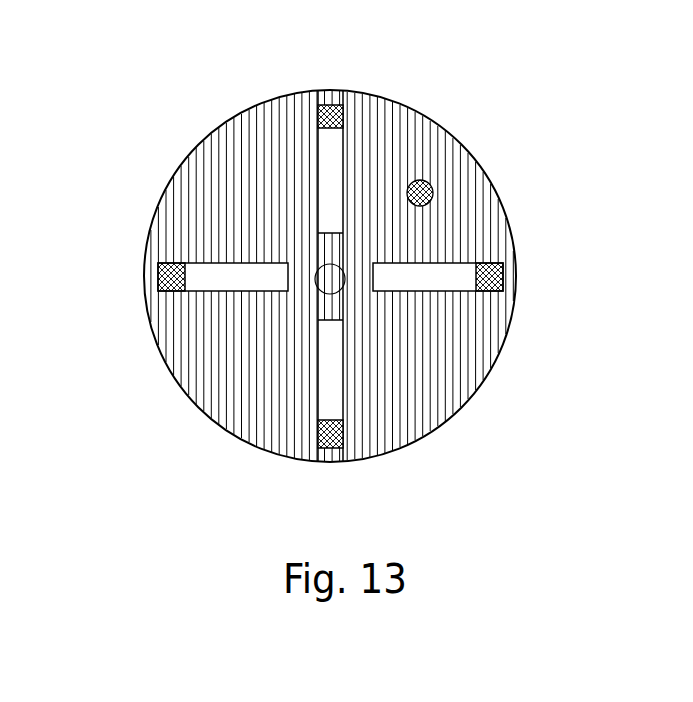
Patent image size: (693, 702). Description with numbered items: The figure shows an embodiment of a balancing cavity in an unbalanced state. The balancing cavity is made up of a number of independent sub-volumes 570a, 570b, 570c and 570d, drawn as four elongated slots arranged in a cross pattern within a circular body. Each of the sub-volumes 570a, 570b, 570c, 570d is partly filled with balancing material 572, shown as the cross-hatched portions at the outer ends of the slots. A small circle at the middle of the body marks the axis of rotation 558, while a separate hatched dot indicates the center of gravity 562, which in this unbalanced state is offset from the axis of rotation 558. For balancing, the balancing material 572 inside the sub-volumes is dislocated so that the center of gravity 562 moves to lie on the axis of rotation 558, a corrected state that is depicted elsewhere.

The axis of rotation 558 is at (334, 284).
The center of gravity 562 is at (427, 177).
The sub-volume 570a is at (333, 157).
The sub-volume 570b is at (437, 278).
The sub-volume 570c is at (327, 395).
The sub-volume 570d is at (200, 278).
The balancing material 572 is at (332, 95).